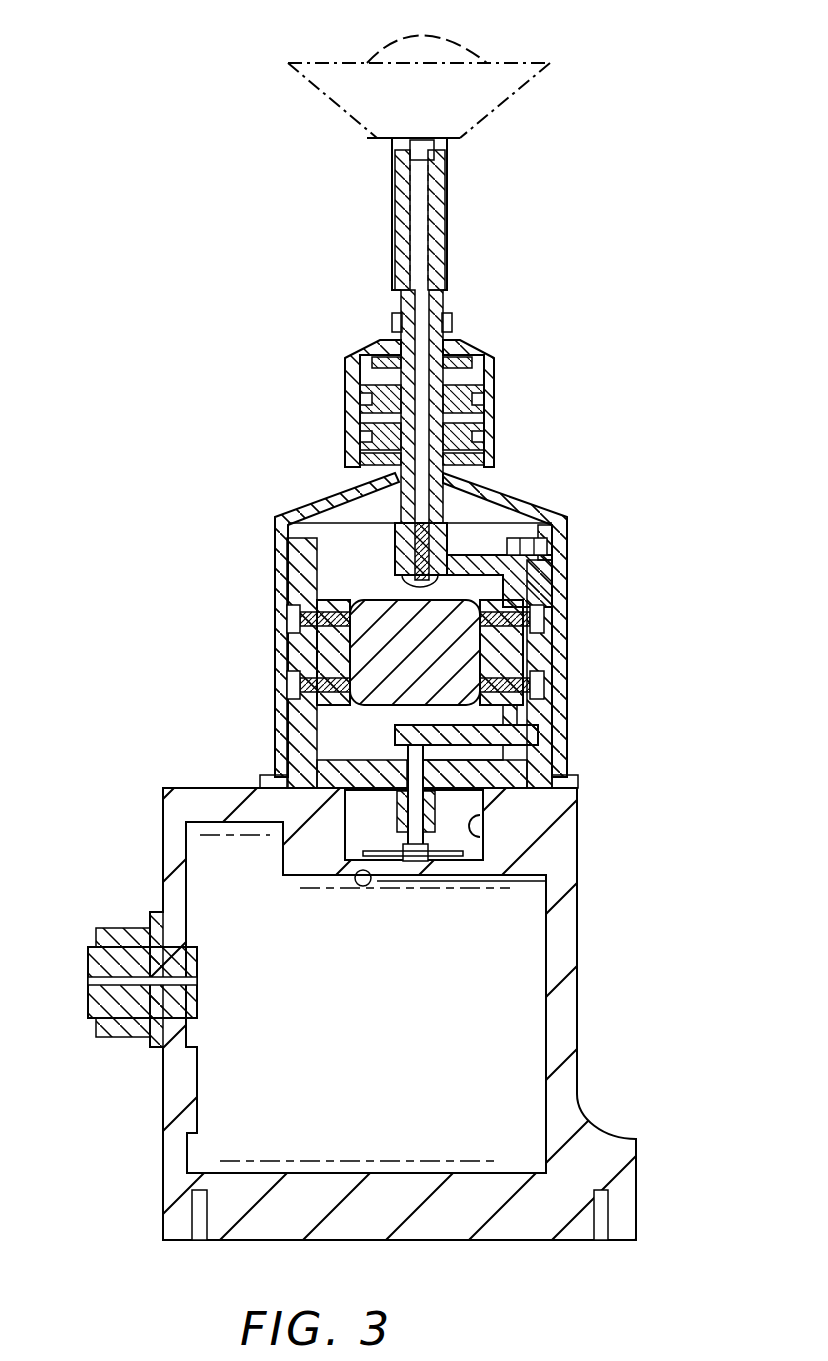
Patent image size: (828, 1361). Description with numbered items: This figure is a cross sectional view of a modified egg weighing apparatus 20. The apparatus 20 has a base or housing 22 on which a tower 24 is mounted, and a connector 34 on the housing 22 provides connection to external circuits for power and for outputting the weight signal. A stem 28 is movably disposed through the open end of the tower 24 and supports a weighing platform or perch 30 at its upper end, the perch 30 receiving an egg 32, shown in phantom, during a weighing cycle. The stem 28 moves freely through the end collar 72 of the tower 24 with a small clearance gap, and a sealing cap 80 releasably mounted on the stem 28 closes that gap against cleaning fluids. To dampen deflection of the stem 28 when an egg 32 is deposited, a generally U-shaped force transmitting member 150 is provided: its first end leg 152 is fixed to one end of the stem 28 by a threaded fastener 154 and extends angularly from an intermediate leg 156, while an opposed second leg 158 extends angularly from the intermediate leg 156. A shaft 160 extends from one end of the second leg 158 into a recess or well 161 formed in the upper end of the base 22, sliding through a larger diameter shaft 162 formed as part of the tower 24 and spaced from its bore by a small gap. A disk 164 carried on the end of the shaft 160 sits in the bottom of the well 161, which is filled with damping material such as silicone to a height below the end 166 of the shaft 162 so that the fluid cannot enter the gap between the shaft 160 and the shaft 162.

The egg weighing apparatus 20 is at (283, 355).
The base or housing 22 is at (580, 877).
The tower 24 is at (568, 600).
The stem 28 is at (402, 210).
The weighing platform or perch 30 is at (322, 92).
The egg 32 is at (366, 60).
The connector 34 is at (120, 1042).
The end collar 72 is at (450, 418).
The sealing cap 80 is at (362, 342).
The force transmitting member 150 is at (484, 555).
The first end leg 152 is at (458, 557).
The threaded fastener 154 is at (413, 520).
The intermediate leg 156 is at (540, 556).
The second leg 158 is at (480, 727).
The shaft 160 is at (405, 782).
The recess or well 161 is at (483, 830).
The larger diameter shaft 162 is at (397, 813).
The disk 164 is at (383, 856).
The end 166 is at (397, 840).